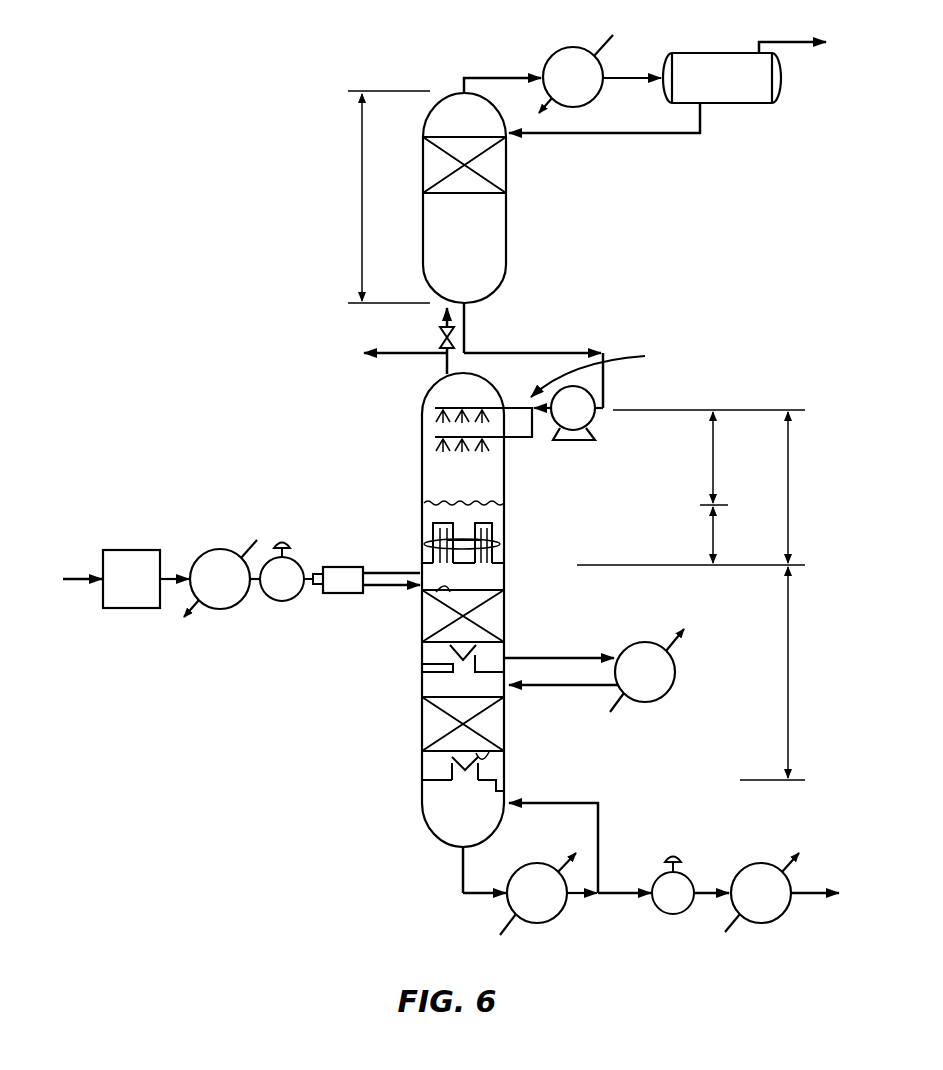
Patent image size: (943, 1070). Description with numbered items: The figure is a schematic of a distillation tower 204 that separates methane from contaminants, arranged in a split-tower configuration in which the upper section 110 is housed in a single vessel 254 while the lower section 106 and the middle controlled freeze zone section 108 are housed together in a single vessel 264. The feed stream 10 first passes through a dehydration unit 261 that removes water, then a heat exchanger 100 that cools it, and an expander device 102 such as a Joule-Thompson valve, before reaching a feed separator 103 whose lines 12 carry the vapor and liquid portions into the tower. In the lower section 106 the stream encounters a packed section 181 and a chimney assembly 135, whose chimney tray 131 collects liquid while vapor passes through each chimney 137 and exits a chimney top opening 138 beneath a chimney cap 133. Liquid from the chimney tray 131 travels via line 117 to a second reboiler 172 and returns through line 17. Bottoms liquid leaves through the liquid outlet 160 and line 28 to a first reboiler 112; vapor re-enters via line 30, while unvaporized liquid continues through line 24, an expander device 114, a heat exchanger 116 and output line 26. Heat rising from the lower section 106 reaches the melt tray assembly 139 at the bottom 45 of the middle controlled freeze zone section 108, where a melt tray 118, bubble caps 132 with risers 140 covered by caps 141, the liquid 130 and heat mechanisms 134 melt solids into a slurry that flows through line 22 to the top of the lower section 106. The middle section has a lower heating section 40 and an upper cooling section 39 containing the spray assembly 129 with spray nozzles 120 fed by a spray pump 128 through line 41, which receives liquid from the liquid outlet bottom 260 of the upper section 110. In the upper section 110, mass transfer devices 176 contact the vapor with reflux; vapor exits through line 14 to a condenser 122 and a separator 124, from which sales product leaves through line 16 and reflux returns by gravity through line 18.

The distillation tower 204 is at (232, 54).
The feed stream 10 is at (82, 579).
The dehydration unit 261 is at (140, 550).
The heat exchanger 100 is at (228, 550).
The expander device 102 is at (275, 600).
The feed separator 103 is at (318, 586).
The line 12 is at (340, 567).
The line 22 is at (420, 571).
The line 14 is at (505, 76).
The condenser 122 is at (576, 47).
The separator 124 is at (698, 52).
The line 16 is at (781, 40).
The line 18 is at (652, 135).
The mass transfer device 176 is at (440, 137).
The upper section 110 is at (362, 197).
The vessel 254 is at (506, 239).
The liquid outlet bottom 260 is at (464, 308).
The line 41 is at (542, 353).
The spray assembly 129 is at (606, 370).
The spray pump 128 is at (597, 430).
The spray nozzle 120 is at (445, 408).
The upper section 39 is at (713, 452).
The lower section 40 is at (713, 530).
The middle controlled freeze zone section 108 is at (788, 478).
The lower section 106 is at (788, 667).
The cap 141 is at (433, 523).
The melt tray assembly 139 is at (497, 514).
The bubble cap 132 is at (493, 525).
The liquid 130 is at (500, 540).
The heat mechanism 134 is at (432, 545).
The riser 140 is at (493, 560).
The melt tray 118 is at (478, 568).
The bottom 45 is at (480, 585).
The packed section 181 is at (442, 592).
The chimney top opening 138 is at (430, 660).
The chimney cap 133 is at (476, 657).
The chimney 137 is at (450, 670).
The chimney assembly 135 is at (428, 648).
The chimney tray 131 is at (440, 677).
The line 117 is at (593, 640).
The second reboiler 172 is at (655, 642).
The line 17 is at (578, 686).
The vessel 264 is at (506, 768).
The line 30 is at (572, 803).
The liquid outlet 160 is at (460, 848).
The first reboiler 112 is at (545, 865).
The line 28 is at (480, 895).
The line 24 is at (608, 893).
The expander device 114 is at (683, 912).
The heat exchanger 116 is at (765, 865).
The line 26 is at (797, 893).